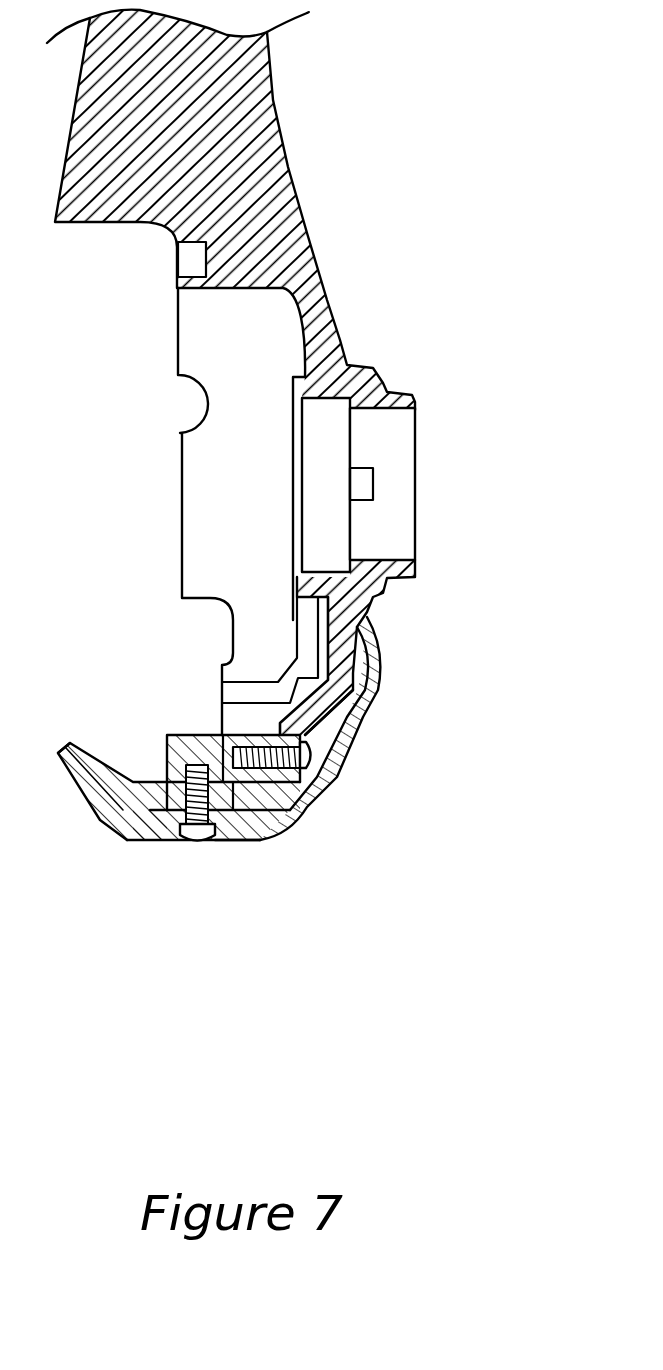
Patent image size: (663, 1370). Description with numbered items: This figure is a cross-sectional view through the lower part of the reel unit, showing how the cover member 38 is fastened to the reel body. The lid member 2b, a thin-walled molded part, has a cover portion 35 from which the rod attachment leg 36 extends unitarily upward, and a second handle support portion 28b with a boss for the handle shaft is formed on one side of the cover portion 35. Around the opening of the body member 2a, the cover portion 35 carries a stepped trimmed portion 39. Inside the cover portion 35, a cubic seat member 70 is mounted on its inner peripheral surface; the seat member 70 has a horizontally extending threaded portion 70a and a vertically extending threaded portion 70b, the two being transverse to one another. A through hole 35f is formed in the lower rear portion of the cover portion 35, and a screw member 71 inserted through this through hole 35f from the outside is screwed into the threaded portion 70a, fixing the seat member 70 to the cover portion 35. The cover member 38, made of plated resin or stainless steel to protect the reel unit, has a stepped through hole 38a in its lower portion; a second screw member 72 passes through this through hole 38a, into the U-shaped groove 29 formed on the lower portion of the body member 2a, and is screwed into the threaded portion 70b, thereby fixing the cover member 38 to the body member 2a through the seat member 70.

The rod attachment leg 36 is at (263, 84).
The cover portion 35 is at (300, 248).
The lid member 2b is at (360, 291).
The second handle support portion 28b is at (383, 378).
The trimmed portion 39 is at (180, 568).
The threaded portion 70a is at (212, 735).
The threaded portion 70b is at (185, 735).
The body member 2a is at (93, 745).
The cover member 38 is at (265, 778).
The stepped through hole 38a is at (185, 843).
The screw member 71 is at (318, 775).
The through hole 35f is at (317, 797).
The screw member 72 is at (196, 840).
The seat member 70 is at (217, 766).
The U-shaped groove 29 is at (227, 843).